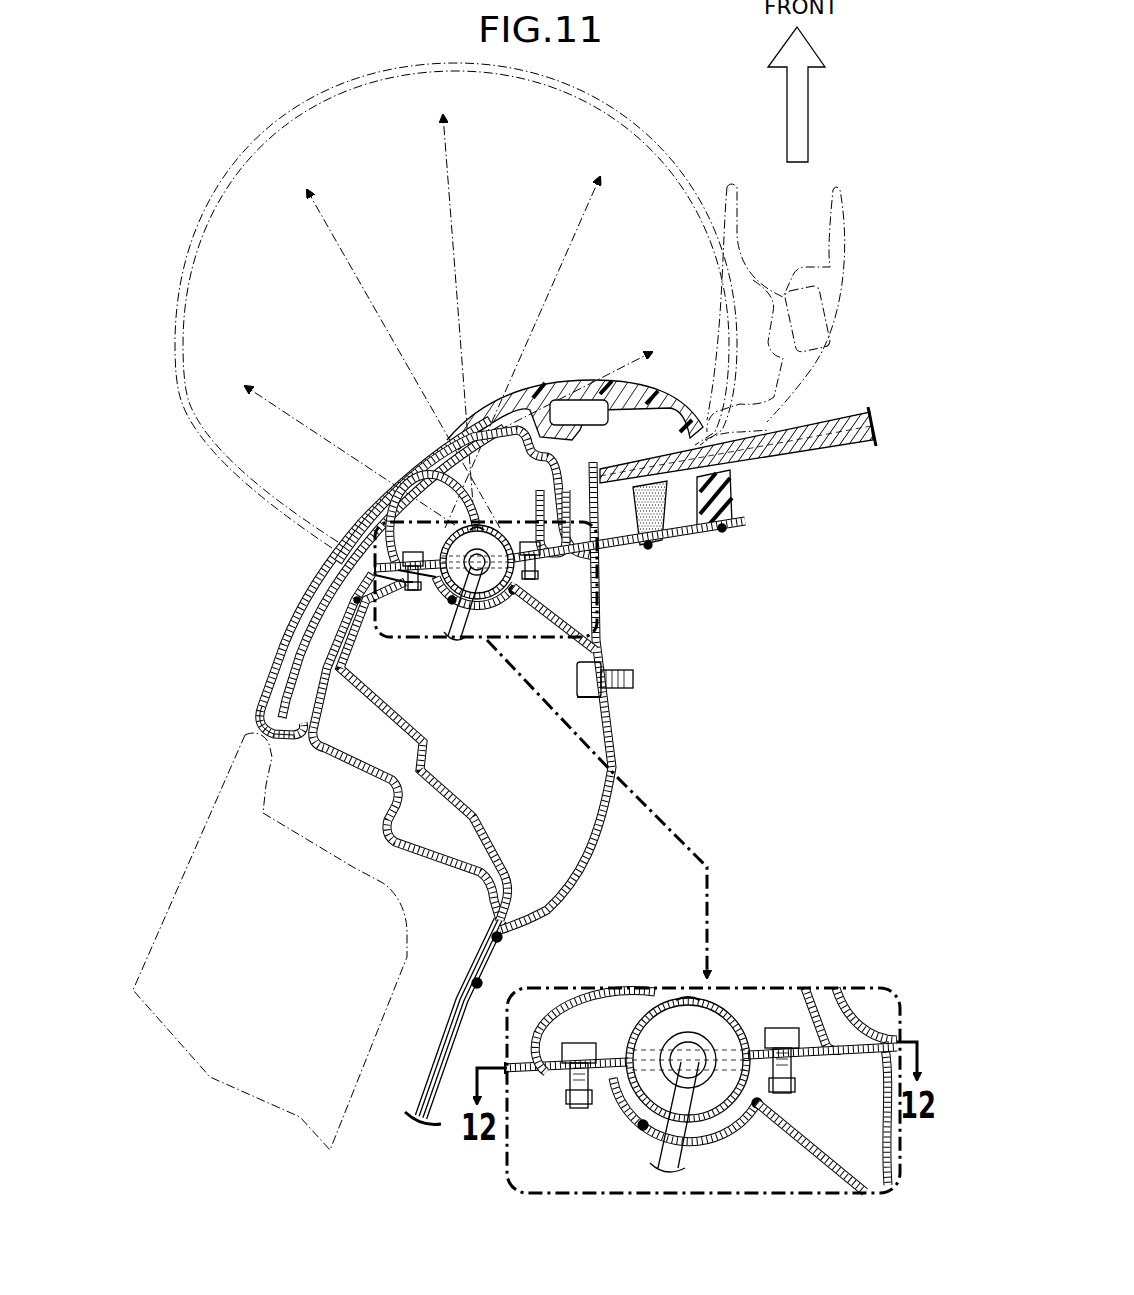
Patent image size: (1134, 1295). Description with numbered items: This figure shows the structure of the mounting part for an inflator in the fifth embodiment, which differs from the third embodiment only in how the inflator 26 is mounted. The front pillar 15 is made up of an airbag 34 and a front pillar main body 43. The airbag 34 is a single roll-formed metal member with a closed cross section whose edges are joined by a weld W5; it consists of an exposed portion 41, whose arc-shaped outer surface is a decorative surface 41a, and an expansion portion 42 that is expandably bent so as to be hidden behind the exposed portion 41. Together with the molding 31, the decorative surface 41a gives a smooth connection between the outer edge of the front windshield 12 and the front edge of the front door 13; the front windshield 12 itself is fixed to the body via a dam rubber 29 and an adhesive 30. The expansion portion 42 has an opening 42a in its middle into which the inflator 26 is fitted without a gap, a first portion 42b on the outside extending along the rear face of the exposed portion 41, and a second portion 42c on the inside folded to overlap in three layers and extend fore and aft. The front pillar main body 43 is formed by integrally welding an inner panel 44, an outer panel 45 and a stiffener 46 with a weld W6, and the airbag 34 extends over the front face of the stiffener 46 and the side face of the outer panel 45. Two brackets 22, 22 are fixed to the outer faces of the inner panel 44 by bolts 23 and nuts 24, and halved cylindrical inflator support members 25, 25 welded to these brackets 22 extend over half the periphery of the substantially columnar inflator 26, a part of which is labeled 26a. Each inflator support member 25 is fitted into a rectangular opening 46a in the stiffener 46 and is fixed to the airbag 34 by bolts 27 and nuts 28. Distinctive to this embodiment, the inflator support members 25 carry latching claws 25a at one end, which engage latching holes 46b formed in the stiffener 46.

The front windshield 12 is at (832, 447).
The front door 13 is at (168, 830).
The front pillar 15 is at (347, 577).
The bracket 22 is at (557, 624).
The bolt 23 is at (603, 664).
The nut 24 is at (612, 696).
The inflator support member 25 is at (446, 596).
The latching claw 25a is at (383, 560).
The inflator 26 is at (577, 785).
The inflator top portion 26a is at (463, 527).
The bolt 27 is at (405, 560).
The nut 28 is at (406, 592).
The dam rubber 29 is at (734, 492).
The adhesive 30 is at (664, 512).
The molding 31 is at (652, 392).
The airbag 34 is at (654, 105).
The exposed portion 41 is at (340, 577).
The decorative surface 41a is at (266, 670).
The expansion portion 42 is at (617, 716).
The opening 42a is at (484, 602).
The first portion 42b is at (298, 628).
The second portion 42c is at (592, 498).
The front pillar main body 43 is at (432, 864).
The inner panel 44 is at (600, 838).
The outer panel 45 is at (370, 767).
The stiffener 46 is at (447, 784).
The rectangular opening 46a is at (591, 584).
The latching hole 46b is at (416, 600).
The weld W5 is at (614, 556).
The weld W6 is at (722, 533).